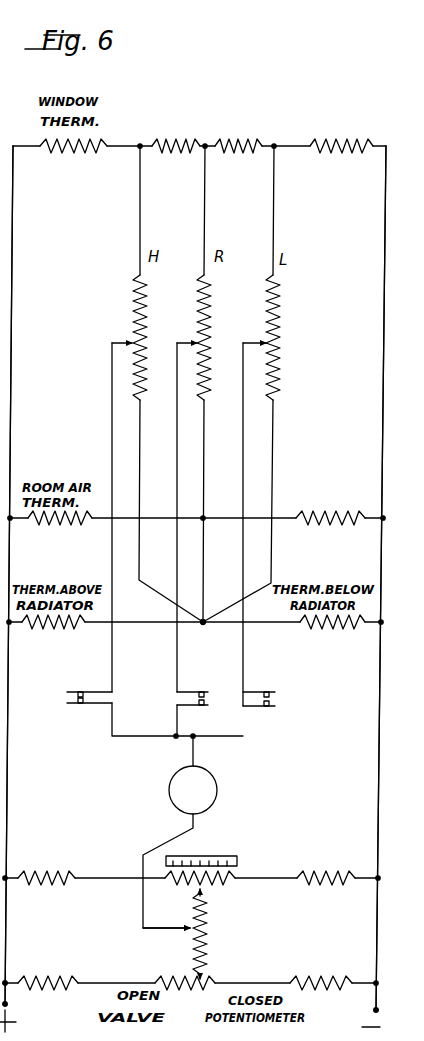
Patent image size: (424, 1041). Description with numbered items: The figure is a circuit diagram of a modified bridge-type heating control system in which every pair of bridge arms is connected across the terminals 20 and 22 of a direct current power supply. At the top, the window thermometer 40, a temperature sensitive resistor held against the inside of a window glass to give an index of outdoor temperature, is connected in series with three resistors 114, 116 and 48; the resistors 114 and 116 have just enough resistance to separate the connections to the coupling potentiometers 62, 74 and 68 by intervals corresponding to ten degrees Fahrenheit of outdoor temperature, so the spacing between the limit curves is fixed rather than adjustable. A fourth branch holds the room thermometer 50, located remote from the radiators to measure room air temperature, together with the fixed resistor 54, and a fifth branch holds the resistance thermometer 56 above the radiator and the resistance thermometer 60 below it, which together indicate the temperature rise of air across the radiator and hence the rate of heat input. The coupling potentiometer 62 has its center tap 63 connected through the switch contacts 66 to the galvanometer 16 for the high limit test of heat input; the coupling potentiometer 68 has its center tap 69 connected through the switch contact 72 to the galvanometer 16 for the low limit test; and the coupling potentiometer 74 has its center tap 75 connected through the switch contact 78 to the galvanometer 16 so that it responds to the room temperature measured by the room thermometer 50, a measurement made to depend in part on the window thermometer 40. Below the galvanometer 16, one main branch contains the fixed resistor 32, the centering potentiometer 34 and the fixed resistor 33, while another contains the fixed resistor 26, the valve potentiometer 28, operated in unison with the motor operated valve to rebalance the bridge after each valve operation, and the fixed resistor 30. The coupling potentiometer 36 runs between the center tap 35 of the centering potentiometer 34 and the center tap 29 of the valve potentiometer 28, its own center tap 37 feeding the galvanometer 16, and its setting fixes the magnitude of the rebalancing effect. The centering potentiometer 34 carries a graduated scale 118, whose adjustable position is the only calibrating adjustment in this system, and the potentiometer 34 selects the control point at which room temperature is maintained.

The galvanometer 16 is at (215, 780).
The terminal 20 is at (12, 835).
The terminal 22 is at (378, 737).
The fixed resistor 26 is at (52, 981).
The valve potentiometer 28 is at (218, 983).
The center tap 29 is at (197, 977).
The fixed resistor 30 is at (320, 981).
The fixed resistor 32 is at (56, 876).
The fixed resistor 33 is at (328, 876).
The centering potentiometer 34 is at (222, 885).
The center tap 35 is at (204, 896).
The coupling potentiometer 36 is at (208, 943).
The center tap 37 is at (182, 934).
The window thermometer 40 is at (64, 154).
The fixed resistor 48 is at (336, 145).
The room thermometer 50 is at (60, 528).
The fixed resistor 54 is at (330, 522).
The resistance thermometer 56 is at (50, 630).
The resistance thermometer 60 is at (322, 630).
The coupling potentiometer 62 is at (146, 312).
The center tap 63 is at (114, 342).
The switch contacts 66 is at (96, 702).
The coupling potentiometer 68 is at (281, 320).
The center tap 69 is at (248, 342).
The switch contact 72 is at (272, 703).
The coupling potentiometer 74 is at (211, 313).
The center tap 75 is at (180, 342).
The switch contact 78 is at (197, 701).
The resistor 114 is at (178, 144).
The resistor 116 is at (240, 144).
The graduated scale 118 is at (218, 856).